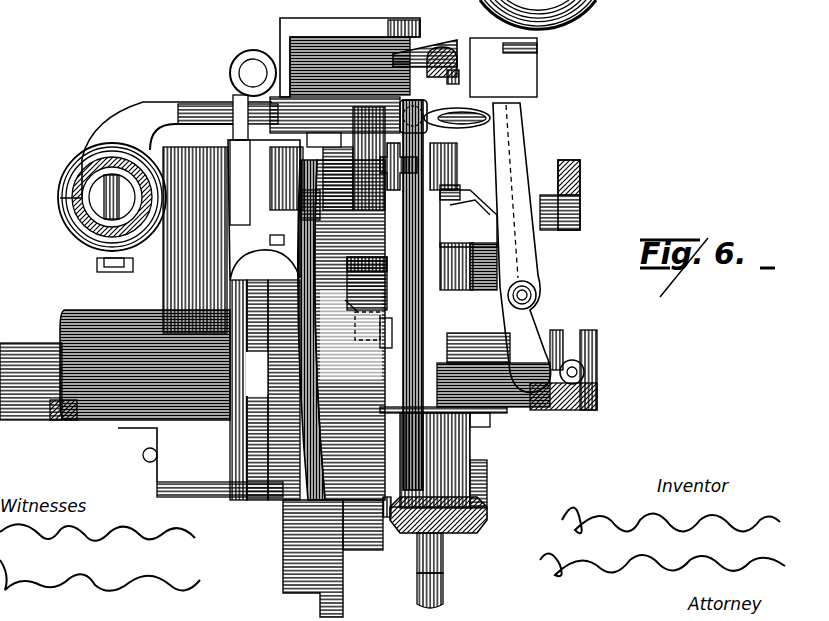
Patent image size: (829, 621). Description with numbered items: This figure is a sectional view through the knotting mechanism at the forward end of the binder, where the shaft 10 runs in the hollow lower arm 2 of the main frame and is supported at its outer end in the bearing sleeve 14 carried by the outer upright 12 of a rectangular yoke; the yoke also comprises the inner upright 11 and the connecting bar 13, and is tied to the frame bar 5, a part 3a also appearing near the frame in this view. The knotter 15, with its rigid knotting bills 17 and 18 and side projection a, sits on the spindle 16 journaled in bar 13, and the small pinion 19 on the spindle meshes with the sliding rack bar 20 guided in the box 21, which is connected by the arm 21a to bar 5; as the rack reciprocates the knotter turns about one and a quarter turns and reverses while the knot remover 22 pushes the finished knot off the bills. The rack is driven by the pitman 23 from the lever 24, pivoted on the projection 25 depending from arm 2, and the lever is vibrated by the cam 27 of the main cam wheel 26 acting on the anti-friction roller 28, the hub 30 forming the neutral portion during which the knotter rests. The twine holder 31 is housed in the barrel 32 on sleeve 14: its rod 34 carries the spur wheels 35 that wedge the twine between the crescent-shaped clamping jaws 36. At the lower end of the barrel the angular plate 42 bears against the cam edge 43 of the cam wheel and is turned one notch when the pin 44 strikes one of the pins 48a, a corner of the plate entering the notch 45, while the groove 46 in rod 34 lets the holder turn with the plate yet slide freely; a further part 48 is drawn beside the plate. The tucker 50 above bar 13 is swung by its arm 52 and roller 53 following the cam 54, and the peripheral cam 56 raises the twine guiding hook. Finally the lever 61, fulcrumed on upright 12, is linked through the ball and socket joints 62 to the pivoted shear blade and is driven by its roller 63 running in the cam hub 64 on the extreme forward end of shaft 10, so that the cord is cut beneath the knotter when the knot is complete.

The lower arm 2 is at (92, 424).
The bearing ring 3a is at (65, 176).
The bar 5 is at (76, 222).
The shaft 10 is at (115, 365).
The inner upright 11 is at (166, 283).
The outer upright 12 is at (538, 152).
The connecting bar 13 is at (428, 112).
The bearing sleeve 14 is at (486, 418).
The knotter 15 is at (428, 46).
The spindle 16 is at (405, 295).
The knotting bill 17 is at (472, 40).
The knotting bill 18 is at (459, 62).
The pinion 19 is at (458, 168).
The rack bar 20 is at (398, 166).
The box 21 is at (460, 188).
The arm 21a is at (143, 100).
The knot remover 22 is at (486, 40).
The pitman 23 is at (252, 192).
The lever 24 is at (249, 245).
The projection 25 is at (206, 497).
The cam wheel 26 is at (350, 330).
The cam 27 is at (264, 385).
The anti-friction roller 28 is at (264, 362).
The hub 30 is at (351, 317).
The twine holder 31 is at (468, 247).
The barrel 32 is at (470, 305).
The rod 34 is at (444, 557).
The spur wheels 35 is at (468, 218).
The clamping jaws 36 is at (550, 14).
The angular plate 42 is at (488, 505).
The cam edge 43 is at (392, 528).
The pin 44 is at (385, 332).
The notch 45 is at (372, 276).
The groove 46 is at (444, 596).
The post 48 is at (428, 460).
The pin 48a is at (476, 467).
The tucker 50 is at (350, 49).
The arm 52 is at (324, 141).
The anti-friction roller 53 is at (302, 198).
The cam 54 is at (283, 233).
The peripheral cam 56 is at (333, 558).
The lever 61 is at (538, 263).
The ball and socket joints 62 is at (520, 117).
The anti-friction roller 63 is at (590, 360).
The cam hub 64 is at (572, 402).
The projection a is at (460, 78).